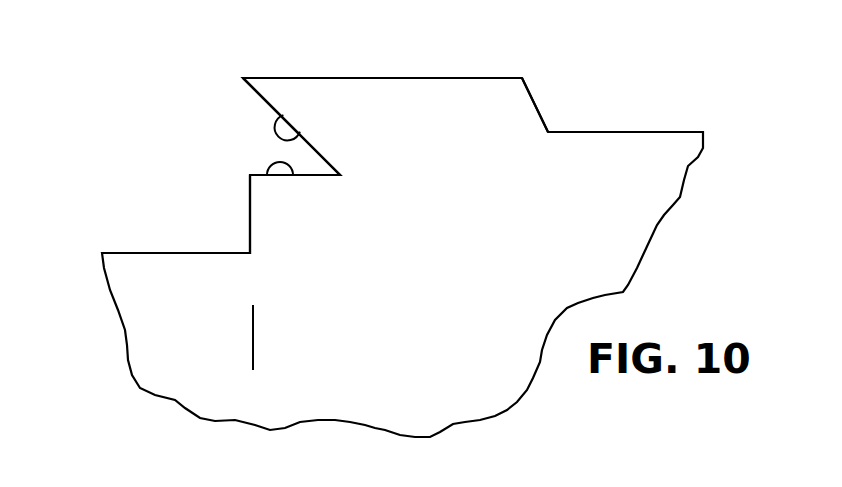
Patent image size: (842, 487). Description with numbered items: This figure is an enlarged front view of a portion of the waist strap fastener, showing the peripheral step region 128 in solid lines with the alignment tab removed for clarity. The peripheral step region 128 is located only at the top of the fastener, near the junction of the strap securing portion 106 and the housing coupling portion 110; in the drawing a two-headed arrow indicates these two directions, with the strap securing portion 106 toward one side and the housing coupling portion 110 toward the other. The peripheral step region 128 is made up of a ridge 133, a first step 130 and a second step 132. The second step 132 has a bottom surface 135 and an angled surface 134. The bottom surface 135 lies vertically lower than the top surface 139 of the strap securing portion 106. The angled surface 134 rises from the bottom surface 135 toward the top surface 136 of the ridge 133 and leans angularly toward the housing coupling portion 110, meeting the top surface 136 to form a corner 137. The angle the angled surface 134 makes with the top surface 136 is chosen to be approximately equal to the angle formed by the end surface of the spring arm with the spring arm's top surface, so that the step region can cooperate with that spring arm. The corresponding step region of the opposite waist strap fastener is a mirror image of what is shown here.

The peripheral step region 128 is at (125, 100).
The first step 130 is at (212, 233).
The second step 132 is at (248, 145).
The corner 137 is at (236, 73).
The top surface 136 is at (368, 78).
The ridge 133 is at (460, 98).
The top surface 139 is at (628, 130).
The angled surface 134 is at (302, 135).
The bottom surface 135 is at (292, 176).
The housing coupling portion 110 is at (253, 337).
The strap securing portion 106 is at (253, 337).